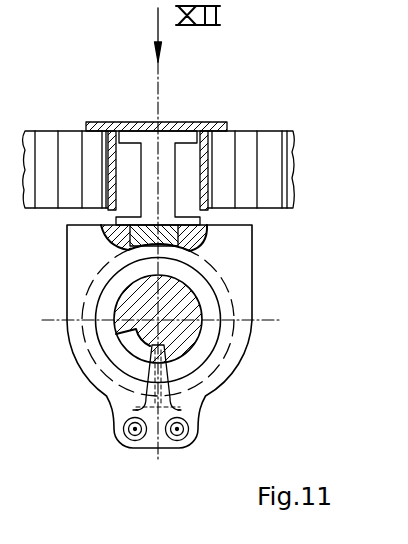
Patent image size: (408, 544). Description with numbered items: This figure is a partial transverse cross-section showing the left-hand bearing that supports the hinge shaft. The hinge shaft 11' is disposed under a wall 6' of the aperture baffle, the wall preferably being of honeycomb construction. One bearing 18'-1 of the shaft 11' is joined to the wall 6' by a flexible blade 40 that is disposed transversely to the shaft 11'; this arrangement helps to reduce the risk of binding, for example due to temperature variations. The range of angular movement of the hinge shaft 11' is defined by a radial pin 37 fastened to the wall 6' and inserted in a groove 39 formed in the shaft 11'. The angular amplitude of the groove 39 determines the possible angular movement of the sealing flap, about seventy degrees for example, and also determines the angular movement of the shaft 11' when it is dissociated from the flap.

The wall of the aperture baffle 6' is at (173, 117).
The flexible blade 40 is at (175, 169).
The bearing 18'-1 is at (237, 336).
The hinge shaft 11' is at (228, 319).
The groove 39 is at (120, 343).
The radial pin 37 is at (168, 358).